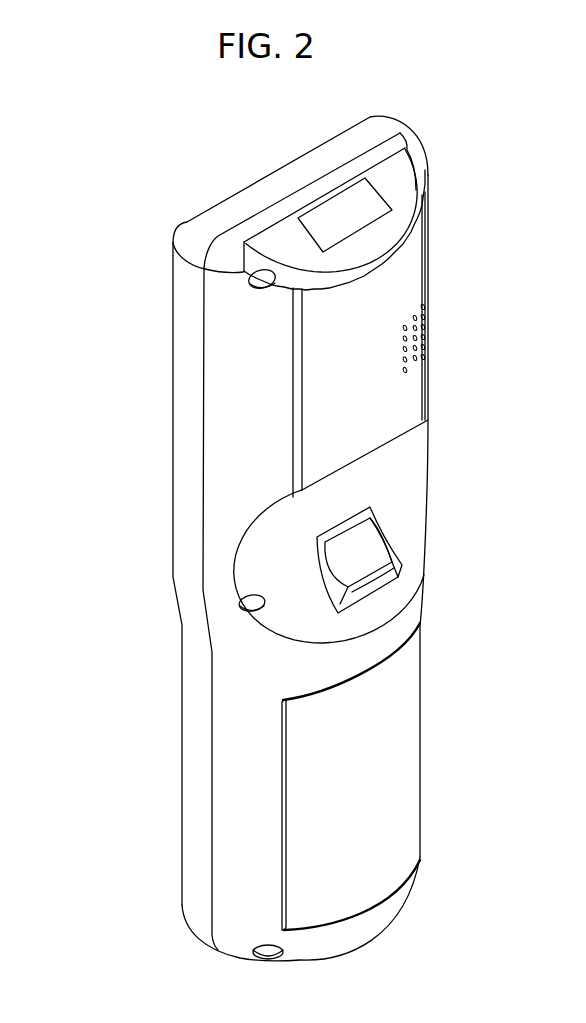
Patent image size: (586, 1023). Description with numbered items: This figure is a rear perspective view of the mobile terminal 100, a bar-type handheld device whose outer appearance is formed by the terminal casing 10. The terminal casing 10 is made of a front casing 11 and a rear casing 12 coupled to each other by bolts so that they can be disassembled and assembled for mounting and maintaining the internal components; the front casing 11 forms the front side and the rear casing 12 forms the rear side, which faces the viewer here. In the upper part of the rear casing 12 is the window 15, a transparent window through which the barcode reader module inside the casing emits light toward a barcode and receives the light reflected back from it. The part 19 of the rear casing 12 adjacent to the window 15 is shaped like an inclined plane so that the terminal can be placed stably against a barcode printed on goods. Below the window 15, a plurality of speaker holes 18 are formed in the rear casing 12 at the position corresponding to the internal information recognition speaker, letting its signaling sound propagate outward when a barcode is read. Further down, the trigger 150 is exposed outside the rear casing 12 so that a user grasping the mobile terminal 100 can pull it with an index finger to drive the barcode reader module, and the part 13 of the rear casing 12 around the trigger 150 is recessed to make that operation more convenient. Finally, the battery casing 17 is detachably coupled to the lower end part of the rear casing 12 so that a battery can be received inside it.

The mobile terminal 100 is at (80, 150).
The terminal casing 10 is at (135, 417).
The front casing 11 is at (192, 420).
The rear casing 12 is at (222, 457).
The recessed part of the rear casing 13 is at (397, 478).
The window 15 is at (382, 200).
The battery casing 17 is at (407, 732).
The speaker holes 18 is at (417, 325).
The inclined part of the rear casing 19 is at (400, 162).
The trigger 150 is at (388, 540).